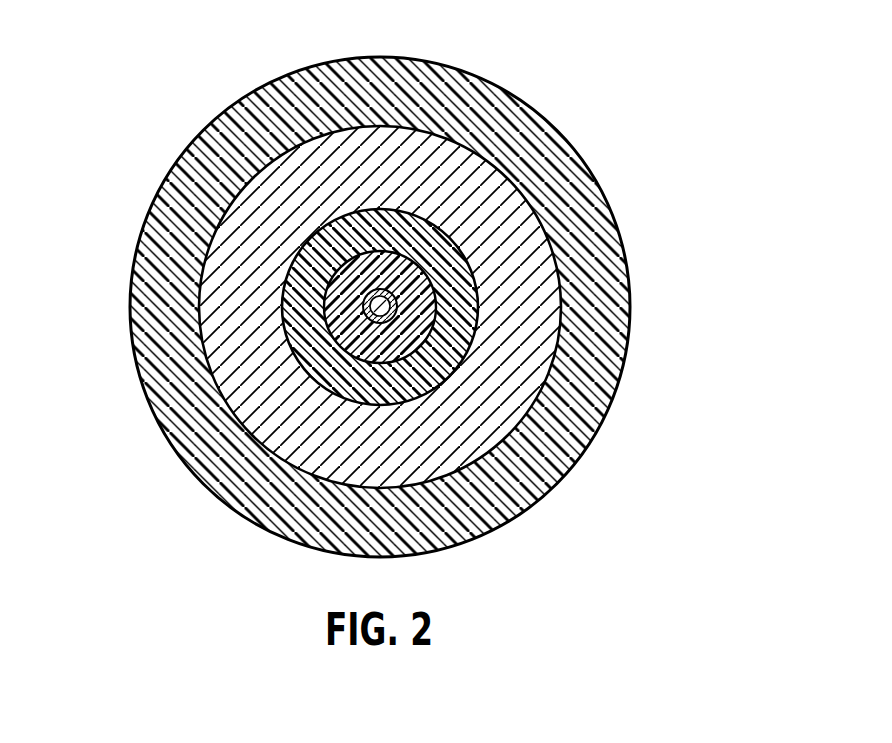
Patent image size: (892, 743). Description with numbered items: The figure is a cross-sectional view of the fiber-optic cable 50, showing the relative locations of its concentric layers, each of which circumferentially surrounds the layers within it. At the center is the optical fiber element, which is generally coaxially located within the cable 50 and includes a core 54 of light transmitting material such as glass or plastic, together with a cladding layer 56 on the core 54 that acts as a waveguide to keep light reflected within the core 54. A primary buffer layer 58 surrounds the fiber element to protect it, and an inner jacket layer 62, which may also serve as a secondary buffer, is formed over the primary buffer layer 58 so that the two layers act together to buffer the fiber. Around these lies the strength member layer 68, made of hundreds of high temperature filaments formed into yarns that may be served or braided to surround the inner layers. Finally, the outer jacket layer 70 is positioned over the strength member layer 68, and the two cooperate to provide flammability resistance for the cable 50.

The cable 50 is at (386, 307).
The core 54 is at (500, 175).
The cladding layer 56 is at (440, 297).
The primary buffer layer 58 is at (353, 333).
The inner jacket layer 62 is at (302, 318).
The strength member layer 68 is at (550, 278).
The outer jacket layer 70 is at (618, 306).